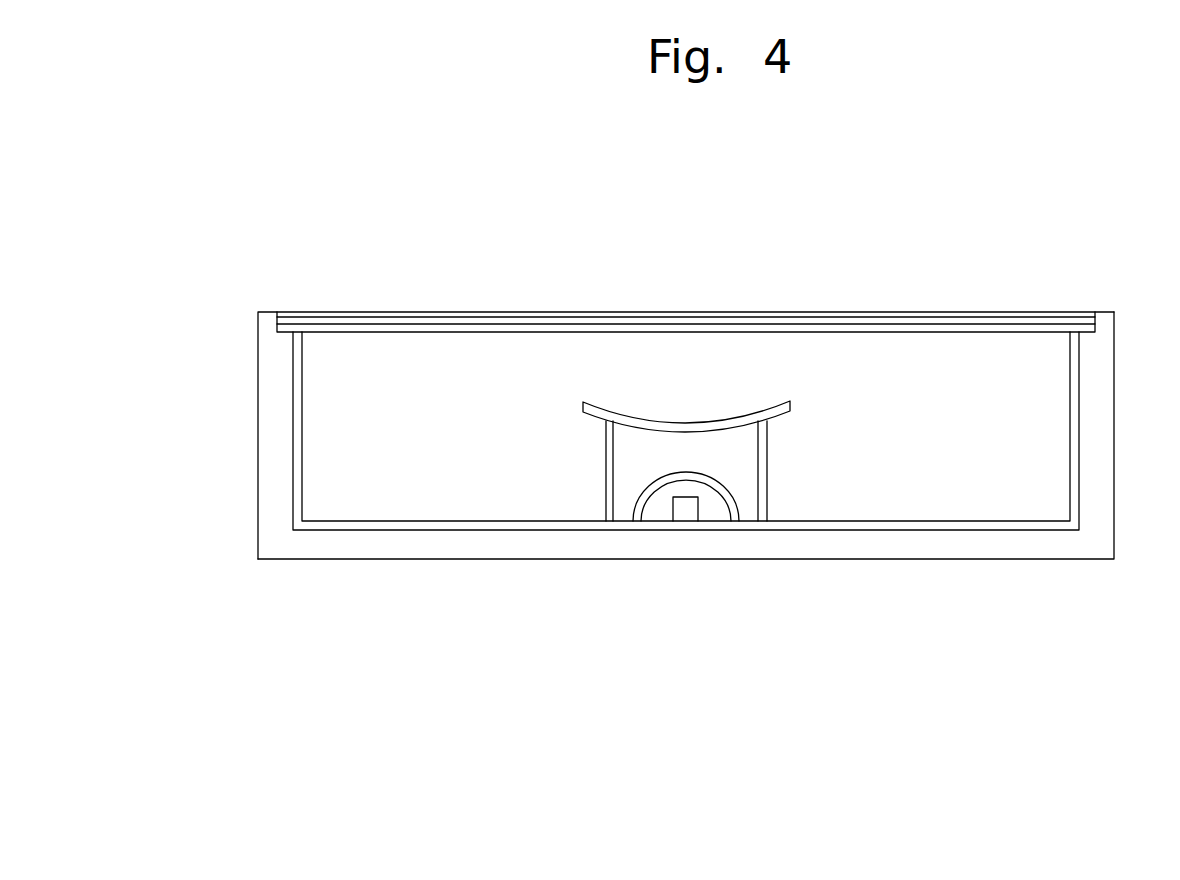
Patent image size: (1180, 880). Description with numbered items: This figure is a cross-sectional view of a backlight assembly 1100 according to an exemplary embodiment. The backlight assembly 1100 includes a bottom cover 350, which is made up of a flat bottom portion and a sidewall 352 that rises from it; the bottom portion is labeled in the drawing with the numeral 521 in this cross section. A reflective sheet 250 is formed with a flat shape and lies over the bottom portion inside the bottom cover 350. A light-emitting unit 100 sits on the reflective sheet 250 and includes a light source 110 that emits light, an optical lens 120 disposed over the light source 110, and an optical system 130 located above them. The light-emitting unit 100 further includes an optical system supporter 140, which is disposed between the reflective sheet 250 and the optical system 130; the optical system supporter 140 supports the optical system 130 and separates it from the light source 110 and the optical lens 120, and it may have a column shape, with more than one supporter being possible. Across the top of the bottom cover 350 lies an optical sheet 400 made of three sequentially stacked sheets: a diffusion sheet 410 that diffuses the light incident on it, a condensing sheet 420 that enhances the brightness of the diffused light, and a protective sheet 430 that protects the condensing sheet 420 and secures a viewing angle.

The backlight assembly 1100 is at (1106, 199).
The bottom cover 350 is at (177, 457).
The sidewall 352 is at (273, 466).
The bottom plate of housing 521 is at (314, 557).
The optical sheet 400 is at (655, 247).
The protective sheet 430 is at (522, 314).
The condensing sheet 420 is at (575, 324).
The diffusion sheet 410 is at (629, 332).
The reflective sheet 250 is at (432, 528).
The light-emitting unit 100 is at (503, 395).
The optical system 130 is at (583, 406).
The optical system supporter 140 is at (610, 437).
The optical lens 120 is at (685, 472).
The light source 110 is at (680, 507).